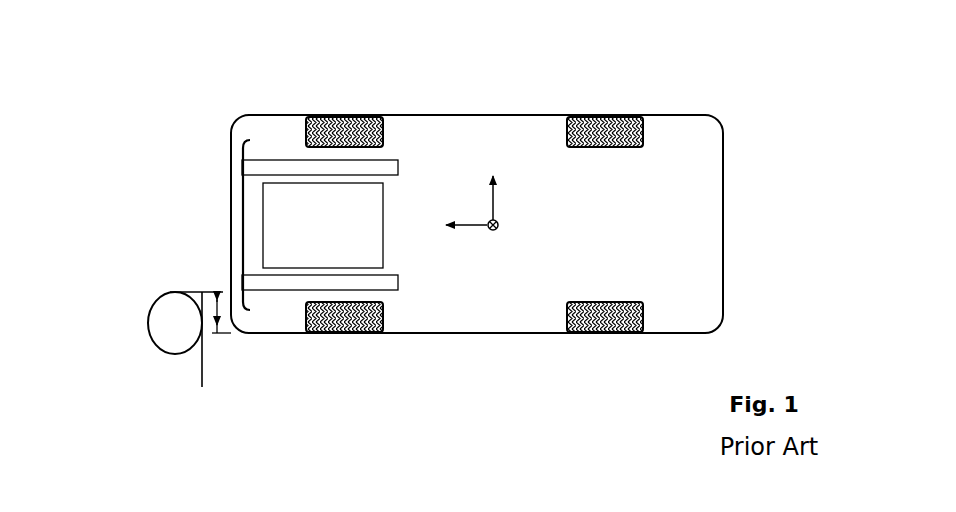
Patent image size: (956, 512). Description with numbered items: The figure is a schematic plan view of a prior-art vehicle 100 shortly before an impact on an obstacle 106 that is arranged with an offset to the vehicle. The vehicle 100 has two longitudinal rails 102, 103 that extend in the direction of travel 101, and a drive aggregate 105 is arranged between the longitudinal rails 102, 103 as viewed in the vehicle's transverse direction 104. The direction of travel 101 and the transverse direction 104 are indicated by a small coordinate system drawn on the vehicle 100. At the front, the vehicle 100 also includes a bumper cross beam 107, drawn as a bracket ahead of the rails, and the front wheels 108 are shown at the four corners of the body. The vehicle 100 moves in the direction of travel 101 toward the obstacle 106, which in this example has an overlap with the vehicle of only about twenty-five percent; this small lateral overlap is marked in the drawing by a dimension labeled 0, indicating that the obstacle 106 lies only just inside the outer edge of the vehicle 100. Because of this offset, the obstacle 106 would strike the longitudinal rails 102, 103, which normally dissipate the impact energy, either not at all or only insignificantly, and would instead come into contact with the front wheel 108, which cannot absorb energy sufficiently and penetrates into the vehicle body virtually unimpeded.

The vehicle 100 is at (490, 112).
The direction of travel 101 is at (467, 227).
The longitudinal rail 102 is at (280, 167).
The longitudinal rail 103 is at (275, 287).
The transverse direction 104 is at (493, 203).
The drive aggregate 105 is at (307, 232).
The obstacle 106 is at (157, 325).
The bumper cross beam 107 is at (243, 184).
The front wheel 108 is at (345, 122).
The zero distance between ball and vehicle 0 is at (212, 300).